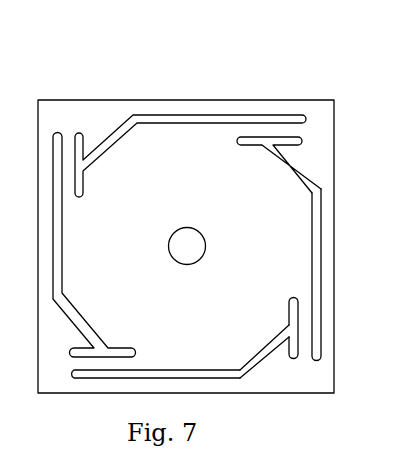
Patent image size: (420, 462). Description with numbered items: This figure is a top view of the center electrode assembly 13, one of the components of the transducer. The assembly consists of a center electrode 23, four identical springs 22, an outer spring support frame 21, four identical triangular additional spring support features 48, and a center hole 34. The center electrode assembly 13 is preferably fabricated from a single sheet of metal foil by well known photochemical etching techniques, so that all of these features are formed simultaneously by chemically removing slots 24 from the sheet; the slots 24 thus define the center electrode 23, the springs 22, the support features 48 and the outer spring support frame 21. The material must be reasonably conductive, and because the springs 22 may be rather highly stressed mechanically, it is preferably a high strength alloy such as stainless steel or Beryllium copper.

The center electrode assembly 13 is at (182, 85).
The outer spring support frame 21 is at (310, 377).
The springs 22 is at (308, 323).
The center electrode 23 is at (262, 213).
The slots 24 is at (318, 245).
The center hole 34 is at (187, 265).
The triangular additional spring support features 48 is at (280, 353).